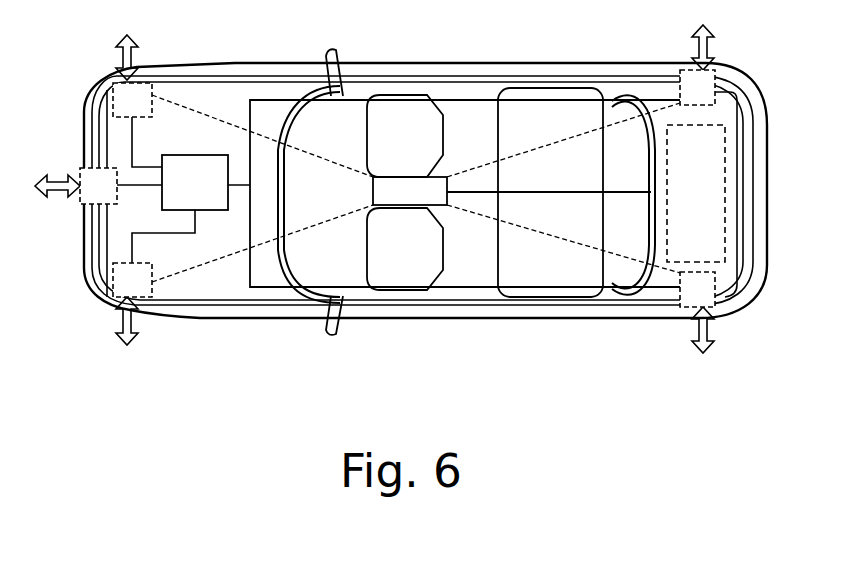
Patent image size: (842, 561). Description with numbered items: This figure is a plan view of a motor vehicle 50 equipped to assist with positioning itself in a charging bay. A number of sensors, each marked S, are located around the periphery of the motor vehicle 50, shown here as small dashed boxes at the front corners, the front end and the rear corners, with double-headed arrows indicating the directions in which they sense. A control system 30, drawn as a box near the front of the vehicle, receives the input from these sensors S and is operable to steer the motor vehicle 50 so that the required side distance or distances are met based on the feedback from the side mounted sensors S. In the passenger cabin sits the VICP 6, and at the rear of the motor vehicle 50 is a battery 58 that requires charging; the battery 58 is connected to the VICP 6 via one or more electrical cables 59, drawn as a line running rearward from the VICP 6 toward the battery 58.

The motor vehicle 50 is at (273, 320).
The control system 30 is at (181, 197).
The VICP 6 is at (448, 206).
The electrical cables 59 is at (548, 198).
The battery 58 is at (677, 263).